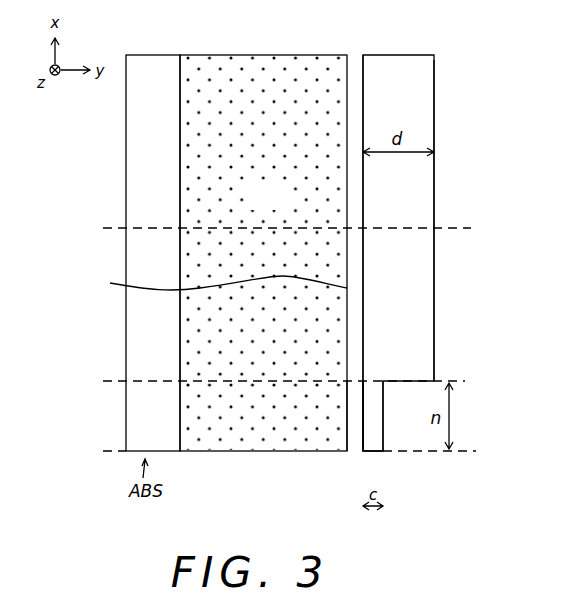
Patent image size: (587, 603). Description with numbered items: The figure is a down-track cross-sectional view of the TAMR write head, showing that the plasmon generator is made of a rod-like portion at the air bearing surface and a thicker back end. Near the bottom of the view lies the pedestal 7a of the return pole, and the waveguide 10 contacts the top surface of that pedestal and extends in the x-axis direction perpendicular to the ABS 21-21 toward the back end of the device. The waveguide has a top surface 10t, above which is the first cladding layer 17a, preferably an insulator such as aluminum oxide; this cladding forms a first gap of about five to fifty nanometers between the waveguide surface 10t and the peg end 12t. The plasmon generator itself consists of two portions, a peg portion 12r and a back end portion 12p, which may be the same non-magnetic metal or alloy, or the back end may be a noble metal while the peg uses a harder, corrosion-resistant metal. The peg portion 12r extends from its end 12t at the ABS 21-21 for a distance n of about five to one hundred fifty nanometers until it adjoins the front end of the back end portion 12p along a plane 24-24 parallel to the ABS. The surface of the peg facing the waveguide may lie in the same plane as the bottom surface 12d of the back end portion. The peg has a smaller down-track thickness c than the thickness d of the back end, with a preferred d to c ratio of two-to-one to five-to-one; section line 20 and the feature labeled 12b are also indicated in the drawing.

The pedestal 7a is at (150, 70).
The waveguide 10 is at (253, 70).
The top surface of the waveguide 10t is at (209, 283).
The trailing shield back portion 12b is at (412, 55).
The bottom surface of the back end portion 12d is at (360, 72).
The back end portion 12p is at (412, 283).
The peg end 12t is at (378, 453).
The peg portion 12r is at (365, 442).
The first cladding layer 17a is at (352, 442).
The section line 20 is at (103, 228).
The plane 24- 24 is at (103, 381).
The ABS 21- 21 is at (103, 451).